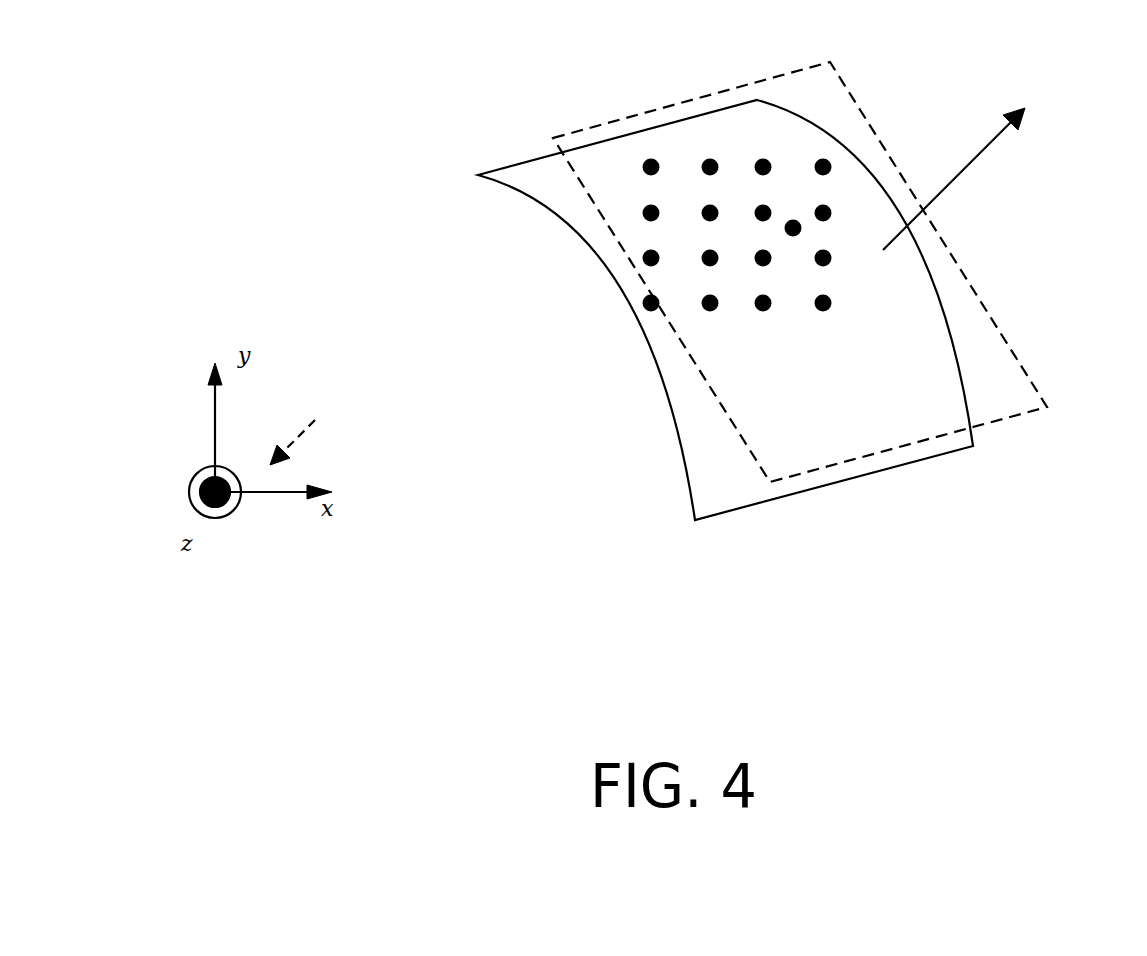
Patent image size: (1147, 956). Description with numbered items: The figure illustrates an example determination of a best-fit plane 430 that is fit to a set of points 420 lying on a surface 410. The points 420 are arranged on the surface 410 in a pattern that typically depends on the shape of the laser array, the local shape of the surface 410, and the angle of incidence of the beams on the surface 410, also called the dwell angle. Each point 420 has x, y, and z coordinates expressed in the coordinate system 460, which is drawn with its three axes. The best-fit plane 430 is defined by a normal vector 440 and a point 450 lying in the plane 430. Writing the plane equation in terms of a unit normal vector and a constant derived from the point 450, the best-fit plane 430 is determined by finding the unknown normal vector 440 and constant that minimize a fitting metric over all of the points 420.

The surface 410 is at (685, 455).
The points 420 is at (648, 302).
The best-fit plane 430 is at (943, 268).
The normal vector 440 is at (983, 152).
The point 450 is at (797, 223).
The coordinate system 460 is at (307, 426).